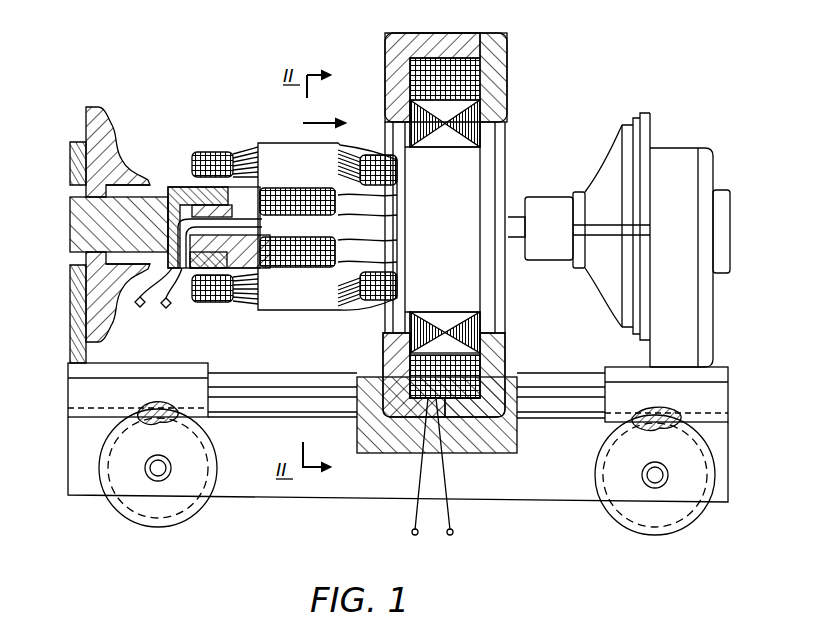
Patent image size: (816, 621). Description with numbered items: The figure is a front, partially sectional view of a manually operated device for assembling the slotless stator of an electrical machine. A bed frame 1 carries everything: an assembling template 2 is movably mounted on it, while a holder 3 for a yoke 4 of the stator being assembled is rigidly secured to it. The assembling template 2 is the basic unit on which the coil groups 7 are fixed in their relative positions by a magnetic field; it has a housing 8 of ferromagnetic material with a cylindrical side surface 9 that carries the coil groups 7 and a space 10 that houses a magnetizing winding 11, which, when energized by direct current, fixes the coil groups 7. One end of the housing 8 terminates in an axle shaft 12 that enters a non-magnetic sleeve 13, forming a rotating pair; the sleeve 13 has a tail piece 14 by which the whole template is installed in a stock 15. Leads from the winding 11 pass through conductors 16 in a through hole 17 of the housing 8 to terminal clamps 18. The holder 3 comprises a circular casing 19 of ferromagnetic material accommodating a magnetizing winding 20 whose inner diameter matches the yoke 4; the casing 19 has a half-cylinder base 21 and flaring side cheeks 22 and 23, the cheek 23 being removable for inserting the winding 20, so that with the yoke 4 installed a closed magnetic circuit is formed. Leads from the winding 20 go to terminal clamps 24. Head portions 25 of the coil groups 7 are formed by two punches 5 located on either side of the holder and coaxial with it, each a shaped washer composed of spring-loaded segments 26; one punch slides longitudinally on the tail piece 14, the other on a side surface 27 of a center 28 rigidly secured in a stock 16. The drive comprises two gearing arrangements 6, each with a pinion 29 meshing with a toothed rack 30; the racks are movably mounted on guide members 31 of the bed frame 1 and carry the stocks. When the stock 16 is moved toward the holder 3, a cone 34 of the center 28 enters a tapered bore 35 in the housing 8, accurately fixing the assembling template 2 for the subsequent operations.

The bed frame 1 is at (298, 495).
The assembling template 2 is at (184, 280).
The holder 3 is at (512, 308).
The yoke 4 is at (444, 313).
The punch 5 is at (130, 152).
The gearing arrangement 6 is at (100, 508).
The coil groups 7 is at (286, 310).
The housing 8 is at (262, 190).
The cylindrical side surface 9 is at (292, 188).
The space 10 is at (268, 268).
The magnetizing winding 11 is at (318, 190).
The axle shaft 12 is at (206, 204).
The sleeve 13 is at (178, 188).
The tail piece 14 is at (72, 208).
The stock 15 is at (78, 142).
The conductors / stock 16 is at (222, 229).
The through hole 17 is at (220, 303).
The terminal clamps 18 is at (164, 305).
The circular casing 19 is at (418, 32).
The magnetizing winding 20 is at (482, 374).
The base 21 is at (462, 33).
The side cheek 22 is at (387, 80).
The side cheek 23 is at (508, 80).
The terminal clamps 24 is at (418, 534).
The head portions 25 is at (194, 156).
The segments 26 is at (600, 275).
The side surface 27 is at (548, 260).
The center 28 is at (546, 192).
The pinion 29 is at (186, 508).
The toothed rack 30 is at (76, 388).
The guide members 31 is at (328, 386).
The cone 34 is at (515, 226).
The tapered bore 35 is at (316, 268).